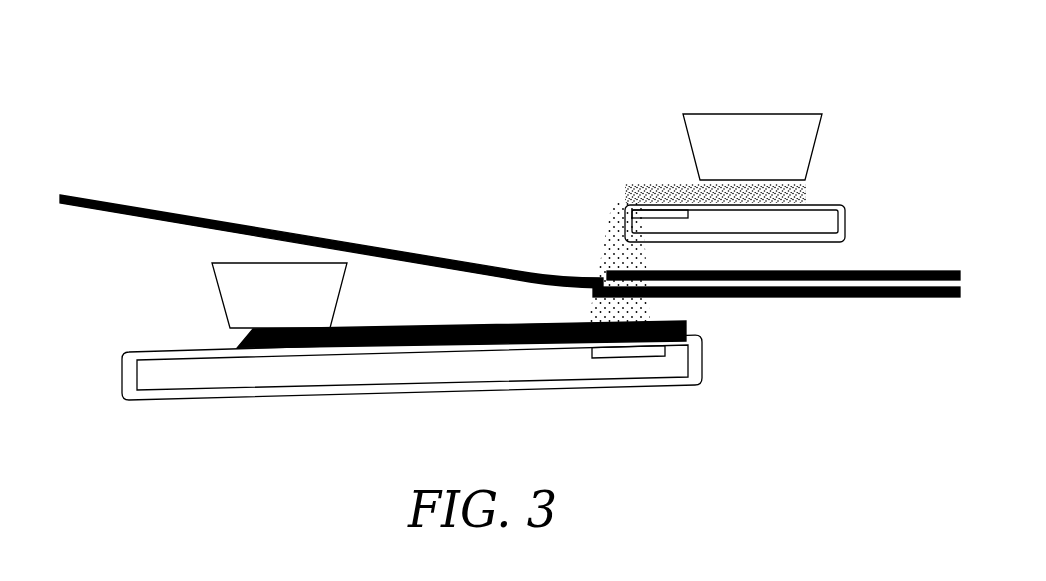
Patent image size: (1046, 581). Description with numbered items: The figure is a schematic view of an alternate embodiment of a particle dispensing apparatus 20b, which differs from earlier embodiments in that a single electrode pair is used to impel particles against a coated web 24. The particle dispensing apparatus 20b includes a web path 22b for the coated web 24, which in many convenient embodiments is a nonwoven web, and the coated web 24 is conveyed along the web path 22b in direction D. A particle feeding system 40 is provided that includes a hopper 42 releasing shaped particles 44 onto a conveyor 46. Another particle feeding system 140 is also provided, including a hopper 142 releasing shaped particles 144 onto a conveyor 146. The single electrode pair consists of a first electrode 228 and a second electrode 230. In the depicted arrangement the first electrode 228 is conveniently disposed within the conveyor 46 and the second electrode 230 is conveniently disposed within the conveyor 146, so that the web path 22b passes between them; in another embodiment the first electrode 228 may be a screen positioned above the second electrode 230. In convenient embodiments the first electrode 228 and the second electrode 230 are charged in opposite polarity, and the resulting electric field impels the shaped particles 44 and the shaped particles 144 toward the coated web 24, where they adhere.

The particle dispensing apparatus 20b is at (186, 45).
The web path 22b is at (195, 172).
The coated web 24 is at (88, 197).
The direction D is at (399, 231).
The particle feeding system 40 is at (754, 202).
The hopper 42 is at (817, 133).
The shaped particles 44 is at (800, 195).
The conveyor 46 is at (847, 219).
The first electrode 228 is at (673, 219).
The particle feeding system 140 is at (412, 368).
The hopper 142 is at (218, 289).
The shaped particles 144 is at (473, 325).
The conveyor 146 is at (367, 393).
The second electrode 230 is at (616, 359).